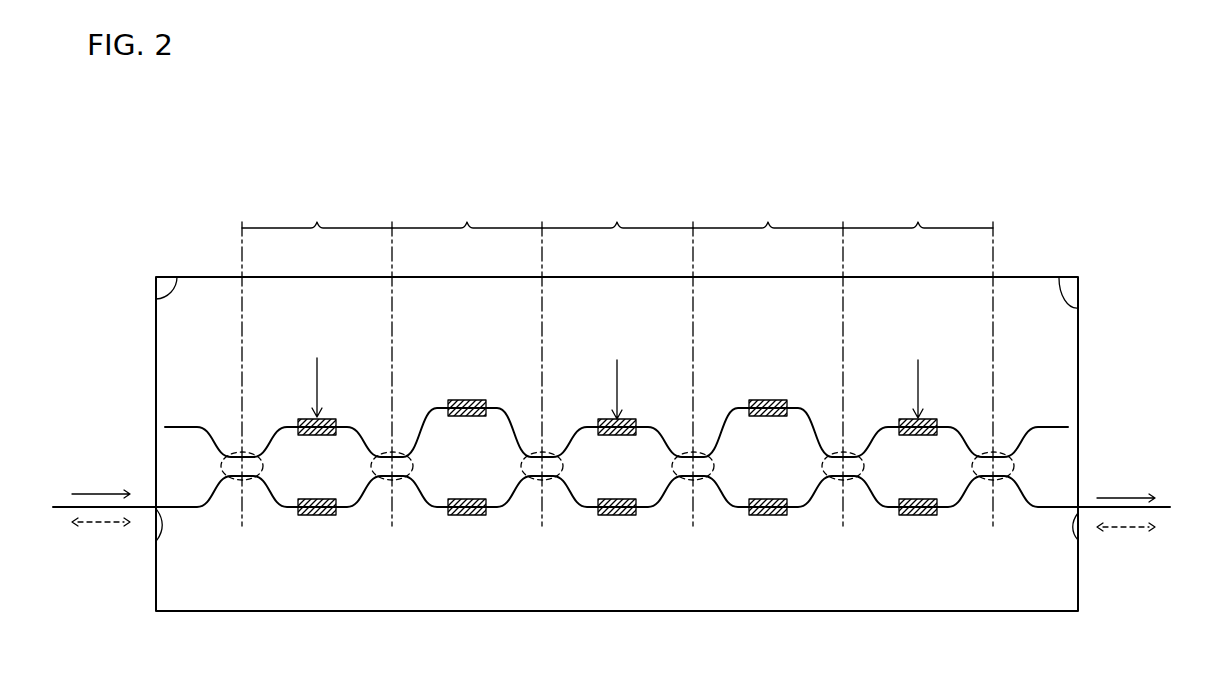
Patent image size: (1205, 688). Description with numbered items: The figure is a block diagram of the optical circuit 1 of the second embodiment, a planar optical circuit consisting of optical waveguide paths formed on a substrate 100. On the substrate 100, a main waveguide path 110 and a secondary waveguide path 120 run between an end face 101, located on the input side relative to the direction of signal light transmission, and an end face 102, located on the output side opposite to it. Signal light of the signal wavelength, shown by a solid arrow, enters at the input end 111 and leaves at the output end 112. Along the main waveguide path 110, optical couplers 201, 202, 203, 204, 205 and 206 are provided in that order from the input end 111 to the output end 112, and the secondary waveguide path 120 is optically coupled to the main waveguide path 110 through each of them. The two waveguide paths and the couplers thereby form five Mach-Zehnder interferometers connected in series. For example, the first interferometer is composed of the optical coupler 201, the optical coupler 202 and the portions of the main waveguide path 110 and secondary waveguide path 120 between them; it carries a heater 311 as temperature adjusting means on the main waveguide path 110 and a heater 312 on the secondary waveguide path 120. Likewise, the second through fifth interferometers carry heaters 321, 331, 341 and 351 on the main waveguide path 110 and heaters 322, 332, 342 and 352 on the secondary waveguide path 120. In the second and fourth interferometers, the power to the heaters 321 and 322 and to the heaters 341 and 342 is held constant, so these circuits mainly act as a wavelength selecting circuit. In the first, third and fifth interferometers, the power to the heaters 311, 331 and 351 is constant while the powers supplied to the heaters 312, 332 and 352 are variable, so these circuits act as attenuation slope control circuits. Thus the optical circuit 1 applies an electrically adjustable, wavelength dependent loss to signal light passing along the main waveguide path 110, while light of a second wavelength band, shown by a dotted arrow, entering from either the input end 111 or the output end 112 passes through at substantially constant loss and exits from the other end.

The optical circuit 1 is at (843, 181).
The substrate 100 is at (673, 611).
The end face 101 is at (177, 277).
The end face 102 is at (1059, 278).
The main waveguide path 110 is at (183, 507).
The input end 111 is at (157, 540).
The output end 112 is at (1078, 540).
The secondary waveguide path 120 is at (183, 427).
The optical coupler 201 is at (249, 479).
The optical coupler 202 is at (399, 479).
The optical coupler 203 is at (549, 479).
The optical coupler 204 is at (700, 479).
The optical coupler 205 is at (850, 479).
The optical coupler 206 is at (1000, 479).
The heater 311 is at (318, 515).
The heater 312 is at (333, 419).
The heater 321 is at (468, 515).
The heater 322 is at (480, 400).
The heater 331 is at (618, 515).
The heater 332 is at (632, 419).
The heater 341 is at (769, 515).
The heater 342 is at (781, 400).
The heater 351 is at (919, 515).
The heater 352 is at (932, 419).